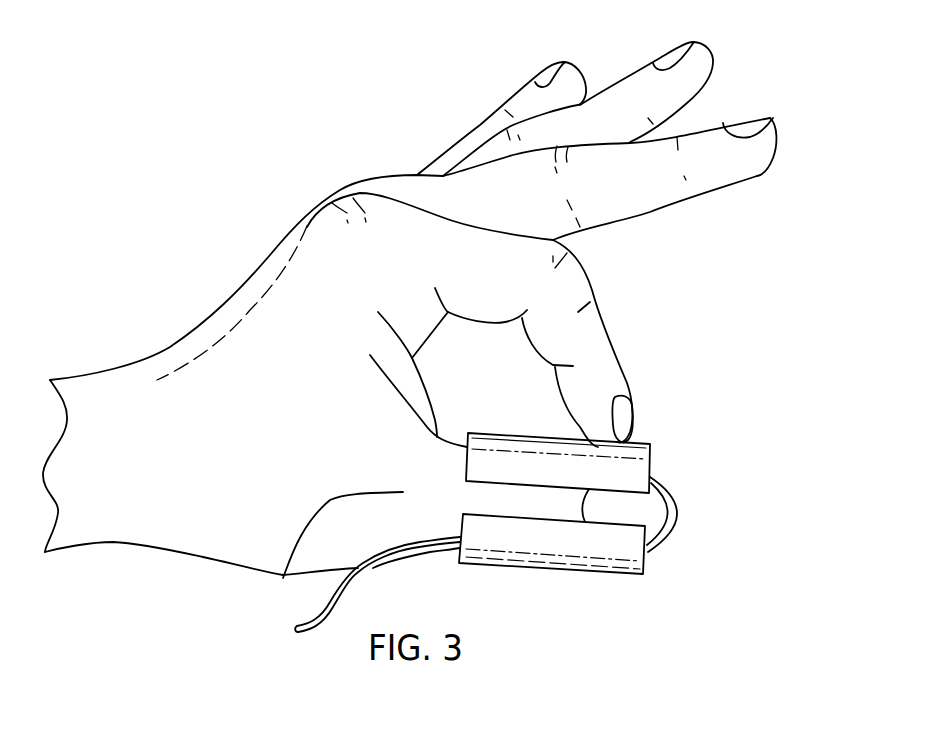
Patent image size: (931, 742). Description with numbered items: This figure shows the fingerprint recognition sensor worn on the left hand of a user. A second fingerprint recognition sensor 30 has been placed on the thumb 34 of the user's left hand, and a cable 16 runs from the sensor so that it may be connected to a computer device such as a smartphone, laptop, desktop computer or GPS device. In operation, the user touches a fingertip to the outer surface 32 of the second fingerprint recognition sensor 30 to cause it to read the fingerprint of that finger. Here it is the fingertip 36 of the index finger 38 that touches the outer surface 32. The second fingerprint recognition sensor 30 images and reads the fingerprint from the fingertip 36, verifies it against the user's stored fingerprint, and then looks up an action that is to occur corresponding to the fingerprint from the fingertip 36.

The cable 16 is at (353, 580).
The second fingerprint recognition sensor 30 is at (592, 549).
The outer surface 32 is at (637, 468).
The thumb 34 is at (287, 574).
The fingertip 36 is at (590, 412).
The index finger 38 is at (580, 310).